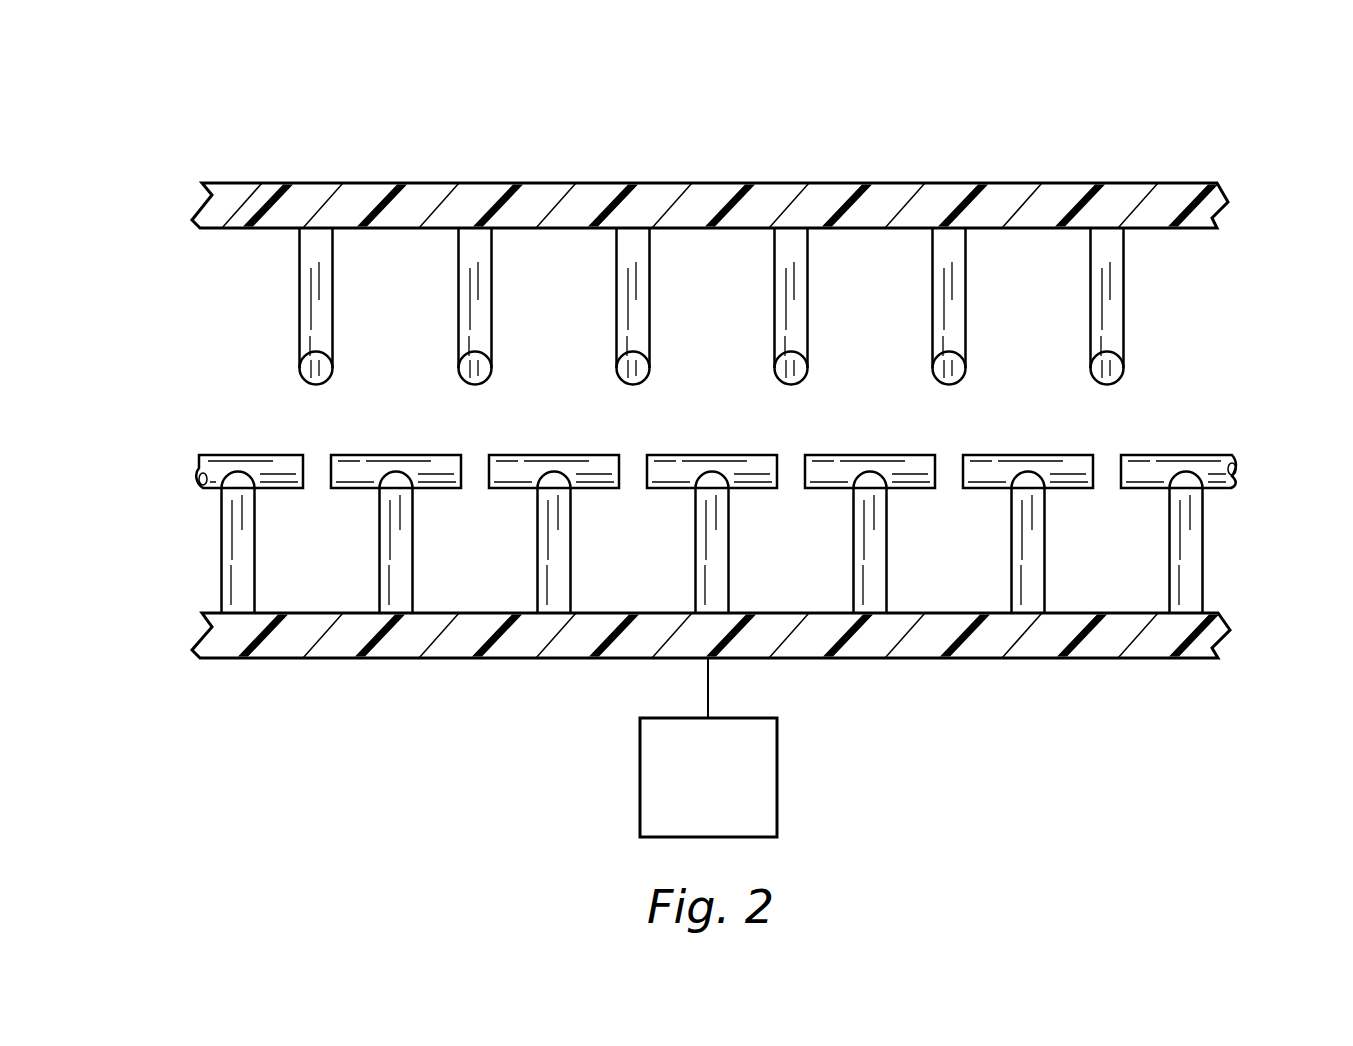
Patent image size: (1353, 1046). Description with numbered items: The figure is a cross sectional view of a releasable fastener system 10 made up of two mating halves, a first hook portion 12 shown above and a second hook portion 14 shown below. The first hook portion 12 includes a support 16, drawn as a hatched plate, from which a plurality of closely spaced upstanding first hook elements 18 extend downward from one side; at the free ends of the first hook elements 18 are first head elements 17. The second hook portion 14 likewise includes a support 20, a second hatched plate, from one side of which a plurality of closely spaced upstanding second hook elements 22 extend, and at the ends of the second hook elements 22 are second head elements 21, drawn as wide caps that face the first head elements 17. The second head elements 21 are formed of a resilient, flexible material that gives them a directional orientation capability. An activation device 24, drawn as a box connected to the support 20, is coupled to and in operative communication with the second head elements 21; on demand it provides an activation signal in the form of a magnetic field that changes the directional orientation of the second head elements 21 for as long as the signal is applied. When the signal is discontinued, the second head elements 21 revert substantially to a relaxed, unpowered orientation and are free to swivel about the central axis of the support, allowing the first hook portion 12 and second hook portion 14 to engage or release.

The releasable fastener system 10 is at (607, 129).
The first hook portion 12 is at (144, 186).
The second hook portion 14 is at (144, 456).
The support 16 is at (1055, 193).
The first head elements 17 is at (630, 370).
The first hook elements 18 is at (1163, 320).
The support 20 is at (985, 652).
The second head elements 21 is at (667, 460).
The second hook elements 22 is at (1239, 568).
The activation device 24 is at (768, 782).